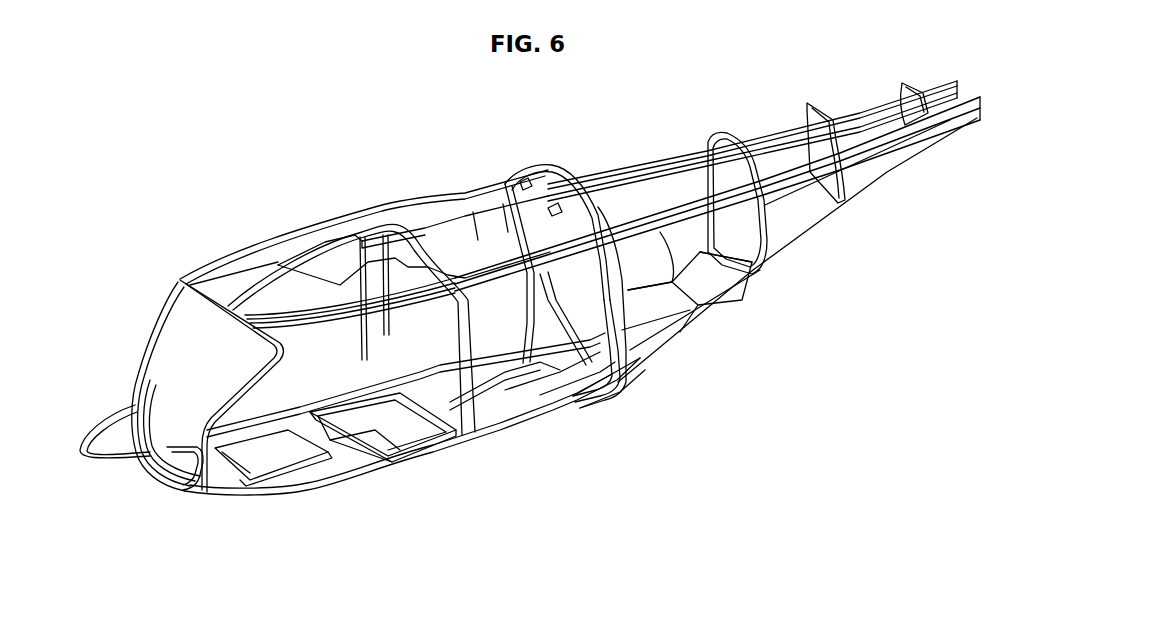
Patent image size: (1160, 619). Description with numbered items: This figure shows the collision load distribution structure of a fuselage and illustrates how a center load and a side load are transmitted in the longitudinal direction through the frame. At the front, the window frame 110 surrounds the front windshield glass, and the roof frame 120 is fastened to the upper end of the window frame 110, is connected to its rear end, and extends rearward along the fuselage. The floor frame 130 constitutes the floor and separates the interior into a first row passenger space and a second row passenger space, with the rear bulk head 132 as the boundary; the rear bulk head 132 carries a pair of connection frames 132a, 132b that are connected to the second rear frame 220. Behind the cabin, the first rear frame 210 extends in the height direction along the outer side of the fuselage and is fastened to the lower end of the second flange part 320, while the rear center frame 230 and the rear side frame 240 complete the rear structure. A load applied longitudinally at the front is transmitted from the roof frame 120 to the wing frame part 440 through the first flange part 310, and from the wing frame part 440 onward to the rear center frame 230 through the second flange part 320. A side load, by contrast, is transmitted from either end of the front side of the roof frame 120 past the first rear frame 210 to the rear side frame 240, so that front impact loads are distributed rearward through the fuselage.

The window frame 110 is at (160, 347).
The roof frame 120 is at (295, 237).
The floor frame 130 is at (357, 478).
The rear bulk head 132 is at (447, 395).
The connection frame 132a is at (554, 397).
The connection frame 132b is at (493, 380).
The first rear frame 210 is at (610, 353).
The second rear frame 220 is at (627, 353).
The rear center frame 230 is at (565, 185).
The rear side frame 240 is at (655, 232).
The first flange part 310 is at (347, 263).
The second flange part 320 is at (542, 195).
The wing frame part 440 is at (397, 222).